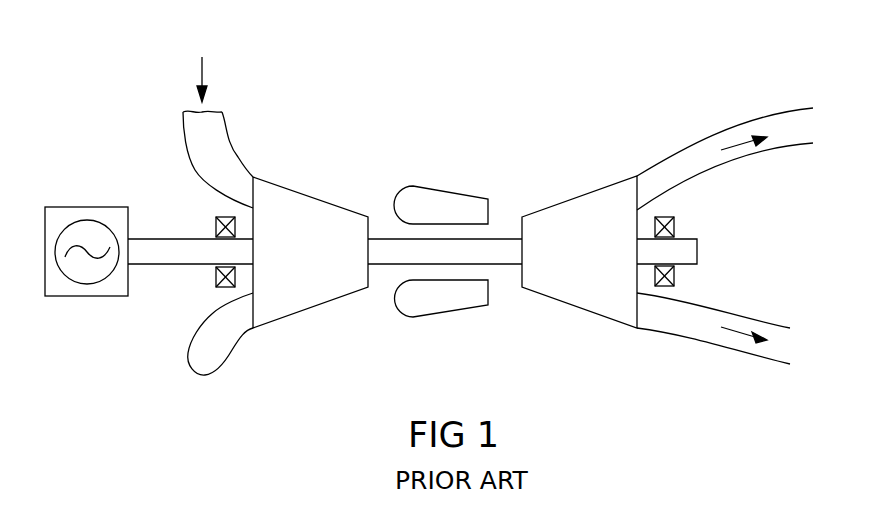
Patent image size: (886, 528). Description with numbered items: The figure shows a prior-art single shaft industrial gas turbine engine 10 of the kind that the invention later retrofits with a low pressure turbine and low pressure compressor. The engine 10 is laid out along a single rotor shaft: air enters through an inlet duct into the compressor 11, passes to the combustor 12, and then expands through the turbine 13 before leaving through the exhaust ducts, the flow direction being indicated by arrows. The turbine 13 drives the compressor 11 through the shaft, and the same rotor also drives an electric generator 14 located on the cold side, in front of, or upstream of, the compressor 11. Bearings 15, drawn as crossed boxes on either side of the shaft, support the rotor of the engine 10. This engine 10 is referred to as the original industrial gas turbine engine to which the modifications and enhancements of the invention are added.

The single shaft industrial gas turbine engine 10 is at (457, 87).
The compressor 11 is at (297, 220).
The combustor 12 is at (433, 207).
The turbine 13 is at (576, 220).
The electric generator 14 is at (87, 232).
The bearings 15 is at (222, 283).